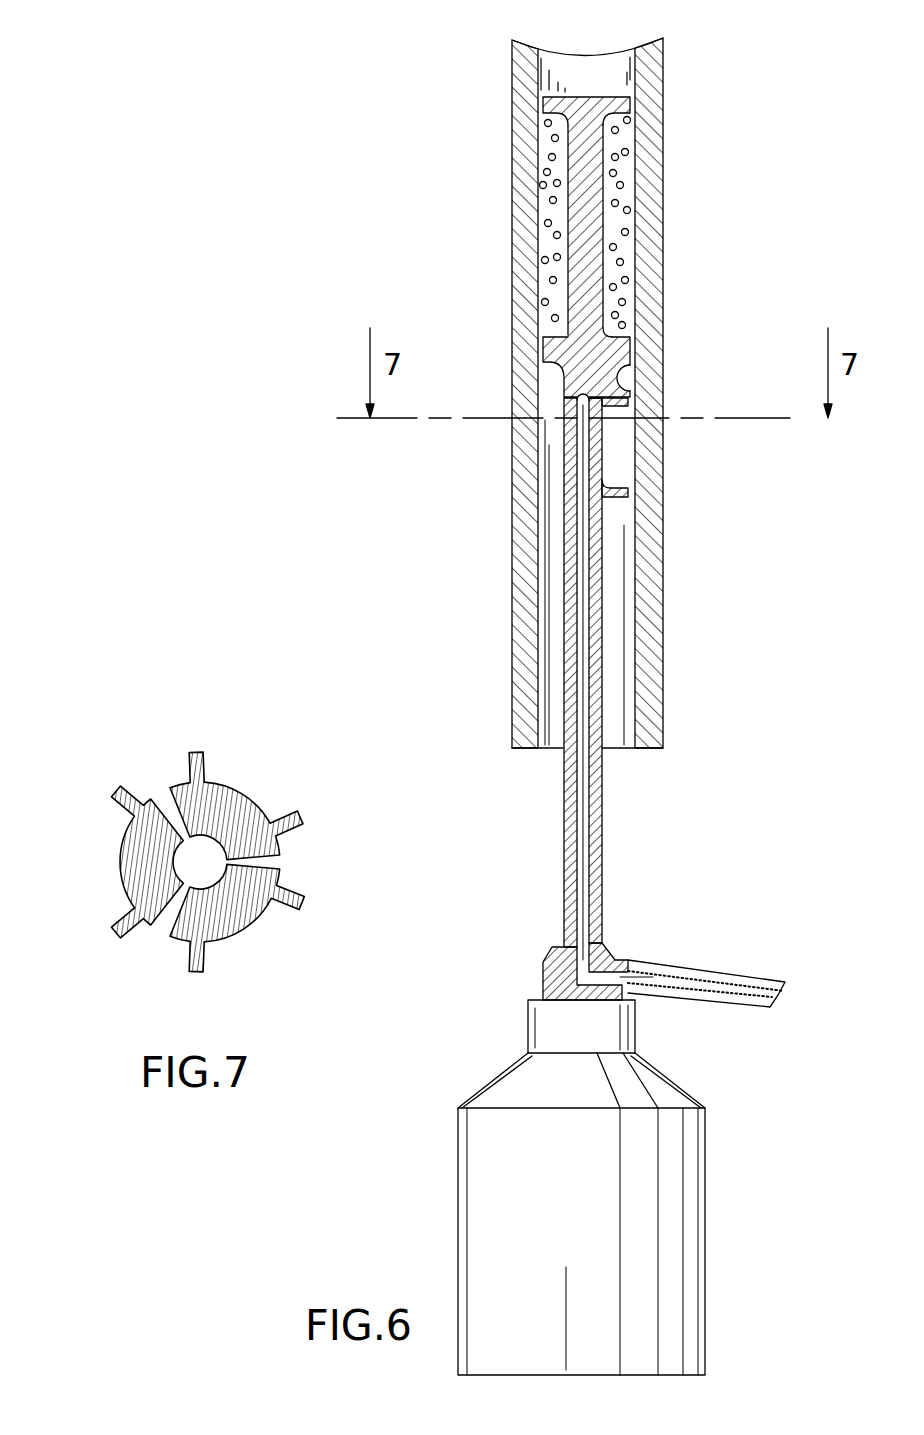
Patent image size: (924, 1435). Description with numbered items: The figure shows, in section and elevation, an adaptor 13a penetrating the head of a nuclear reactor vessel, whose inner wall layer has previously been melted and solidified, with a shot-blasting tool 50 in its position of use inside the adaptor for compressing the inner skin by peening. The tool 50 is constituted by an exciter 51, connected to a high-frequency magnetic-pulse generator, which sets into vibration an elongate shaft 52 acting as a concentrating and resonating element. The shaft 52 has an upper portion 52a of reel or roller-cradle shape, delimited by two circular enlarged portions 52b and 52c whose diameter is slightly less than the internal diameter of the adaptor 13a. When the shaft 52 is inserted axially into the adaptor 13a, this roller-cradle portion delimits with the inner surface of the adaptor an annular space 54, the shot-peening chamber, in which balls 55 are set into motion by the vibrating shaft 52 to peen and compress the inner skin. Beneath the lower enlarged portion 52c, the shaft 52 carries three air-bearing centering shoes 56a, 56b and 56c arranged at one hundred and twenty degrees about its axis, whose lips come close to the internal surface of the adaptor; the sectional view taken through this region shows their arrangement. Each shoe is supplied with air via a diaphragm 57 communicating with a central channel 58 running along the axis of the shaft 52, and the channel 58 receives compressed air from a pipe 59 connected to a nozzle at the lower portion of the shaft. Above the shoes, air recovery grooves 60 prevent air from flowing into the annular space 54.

In FIG. 6, the adaptor 13a is at (648, 150).
In FIG. 6, the tool 50 is at (623, 688).
In FIG. 6, the exciter 51 is at (640, 1152).
In FIG. 6, the shaft 52 is at (600, 843).
In FIG. 6, the upper portion of the shaft 52a is at (651, 201).
In FIG. 6, the upper enlarged portion 52b is at (583, 112).
In FIG. 6, the lower enlarged portion 52c is at (628, 348).
In FIG. 6, the annular space 54 is at (614, 223).
In FIG. 6, the balls 55 is at (512, 222).
In FIG. 7, the air-bearing centering shoe 56a is at (230, 915).
In FIG. 7, the air-bearing centering shoe 56b is at (232, 820).
In FIG. 7, the air-bearing centering shoe 56c is at (147, 858).
In FIG. 6, the diaphragm 57 is at (601, 424).
In FIG. 6, the central channel 58 is at (586, 453).
In FIG. 6, the pipe 59 is at (733, 973).
In FIG. 6, the air recovery grooves 60 is at (615, 382).